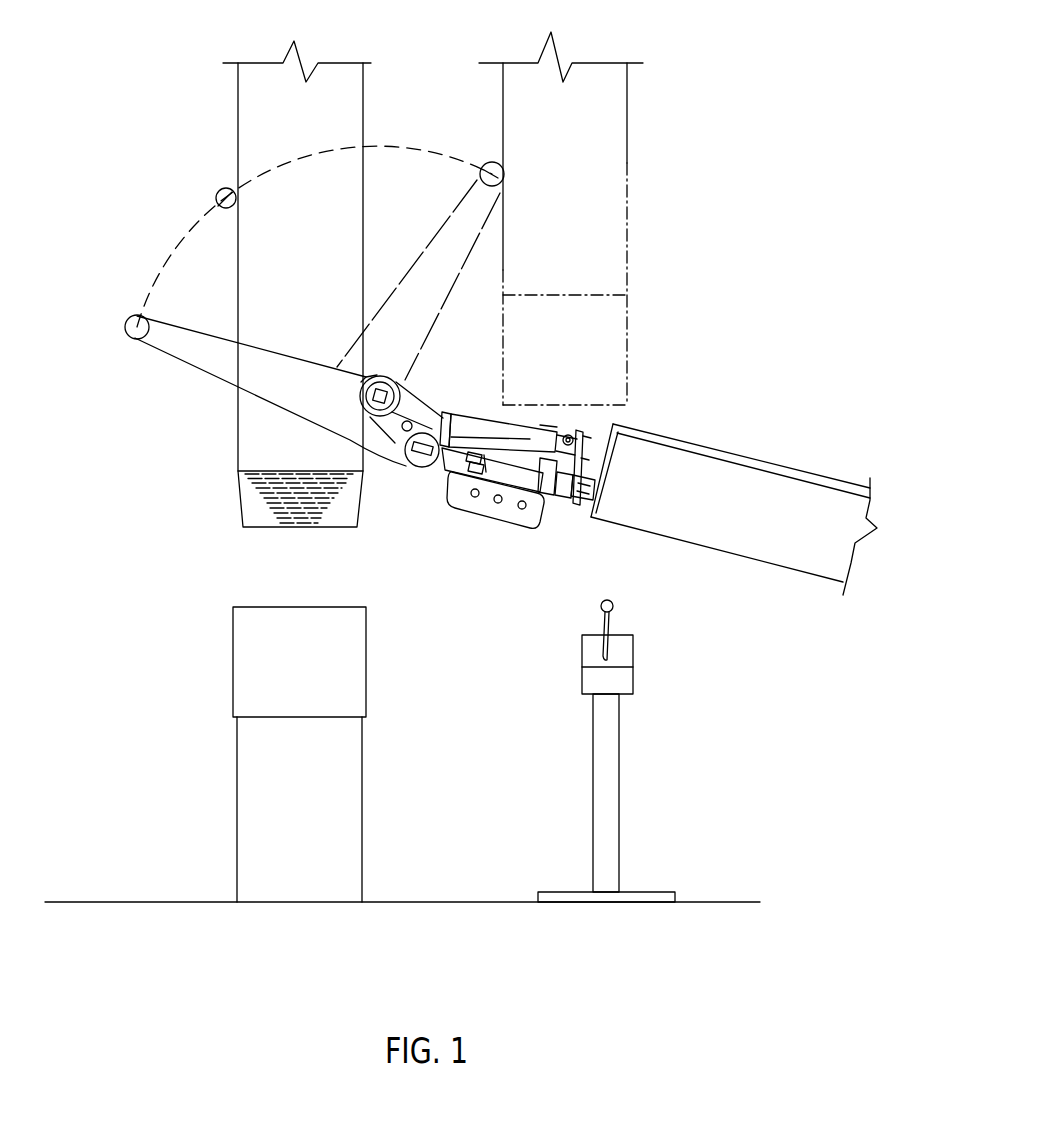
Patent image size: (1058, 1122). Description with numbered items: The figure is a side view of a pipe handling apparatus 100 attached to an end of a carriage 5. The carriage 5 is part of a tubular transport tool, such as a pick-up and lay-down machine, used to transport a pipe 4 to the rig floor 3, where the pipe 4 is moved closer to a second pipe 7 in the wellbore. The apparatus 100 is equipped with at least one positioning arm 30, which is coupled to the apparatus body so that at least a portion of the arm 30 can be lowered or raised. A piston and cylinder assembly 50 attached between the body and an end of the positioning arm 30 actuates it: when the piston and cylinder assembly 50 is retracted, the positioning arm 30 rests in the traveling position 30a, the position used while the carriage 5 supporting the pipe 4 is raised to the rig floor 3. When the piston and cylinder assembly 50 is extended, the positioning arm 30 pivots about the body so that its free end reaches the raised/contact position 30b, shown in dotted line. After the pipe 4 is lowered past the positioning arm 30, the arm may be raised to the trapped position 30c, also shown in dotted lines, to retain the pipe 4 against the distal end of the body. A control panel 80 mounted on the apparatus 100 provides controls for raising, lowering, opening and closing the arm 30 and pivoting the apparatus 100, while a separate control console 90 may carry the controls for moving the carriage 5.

The pipe handling apparatus 100 is at (96, 84).
The rig floor 3 is at (145, 902).
The pipe 4 is at (238, 92).
The carriage 5 is at (680, 442).
The second pipe 7 is at (237, 773).
The positioning arm 30 is at (200, 358).
The traveling position 30a is at (126, 322).
The raised/contact position 30b is at (490, 166).
The trapped position 30c is at (218, 192).
The piston and cylinder assembly 50 is at (468, 425).
The control panel 80 is at (487, 508).
The control console 90 is at (633, 658).